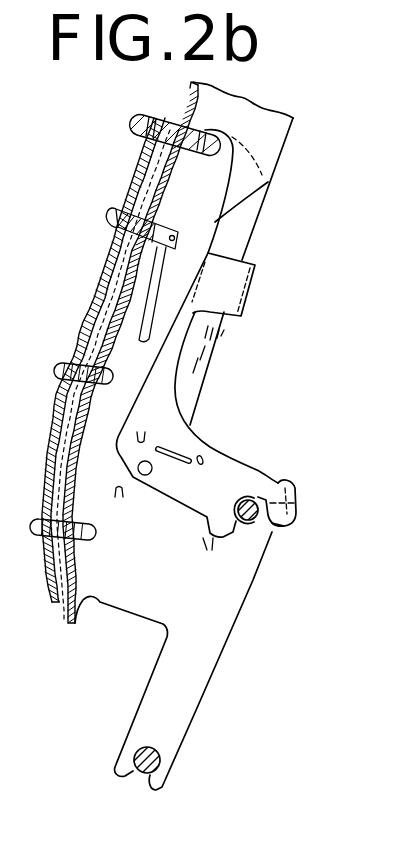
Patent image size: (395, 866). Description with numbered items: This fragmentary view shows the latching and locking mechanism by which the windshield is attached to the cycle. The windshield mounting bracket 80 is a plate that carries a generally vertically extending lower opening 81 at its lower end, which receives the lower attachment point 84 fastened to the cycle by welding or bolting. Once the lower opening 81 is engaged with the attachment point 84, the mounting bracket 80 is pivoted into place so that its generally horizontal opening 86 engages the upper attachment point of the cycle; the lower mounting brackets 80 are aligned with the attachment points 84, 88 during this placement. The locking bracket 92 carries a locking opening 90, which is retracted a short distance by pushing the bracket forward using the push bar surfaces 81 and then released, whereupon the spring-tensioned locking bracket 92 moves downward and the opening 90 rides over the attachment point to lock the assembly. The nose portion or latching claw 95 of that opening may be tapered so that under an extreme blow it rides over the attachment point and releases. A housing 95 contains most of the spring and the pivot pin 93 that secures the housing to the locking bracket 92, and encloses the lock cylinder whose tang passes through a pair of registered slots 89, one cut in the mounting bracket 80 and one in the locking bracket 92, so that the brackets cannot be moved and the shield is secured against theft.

The windshield mounting bracket 80 is at (262, 617).
The lower opening / push bar 81 is at (248, 300).
The lower attachment point 84 is at (142, 768).
The horizontal opening 86 is at (246, 499).
The attachment point 88 is at (255, 528).
The slot 89 is at (176, 447).
The locking opening 90 is at (273, 483).
The locking bracket 92 is at (221, 462).
The pivot pin 93 is at (303, 505).
The housing / nose portion 95 is at (280, 527).